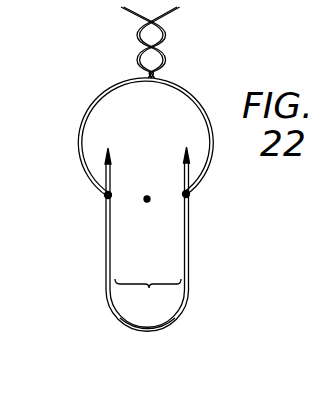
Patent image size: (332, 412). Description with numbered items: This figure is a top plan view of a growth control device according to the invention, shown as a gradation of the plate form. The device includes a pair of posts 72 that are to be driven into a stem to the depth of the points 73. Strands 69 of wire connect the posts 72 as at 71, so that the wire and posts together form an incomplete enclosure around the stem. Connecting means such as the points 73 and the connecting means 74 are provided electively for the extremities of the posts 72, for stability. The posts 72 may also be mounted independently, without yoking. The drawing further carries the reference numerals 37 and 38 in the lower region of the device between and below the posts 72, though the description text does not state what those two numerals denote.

The strands of wire 69 is at (113, 86).
The connection of strands to posts 71 is at (105, 194).
The posts 72 is at (183, 225).
The points 73 is at (186, 149).
The opening 37 is at (146, 198).
The bottom portion 38 is at (150, 292).
The connecting means 74 is at (147, 332).